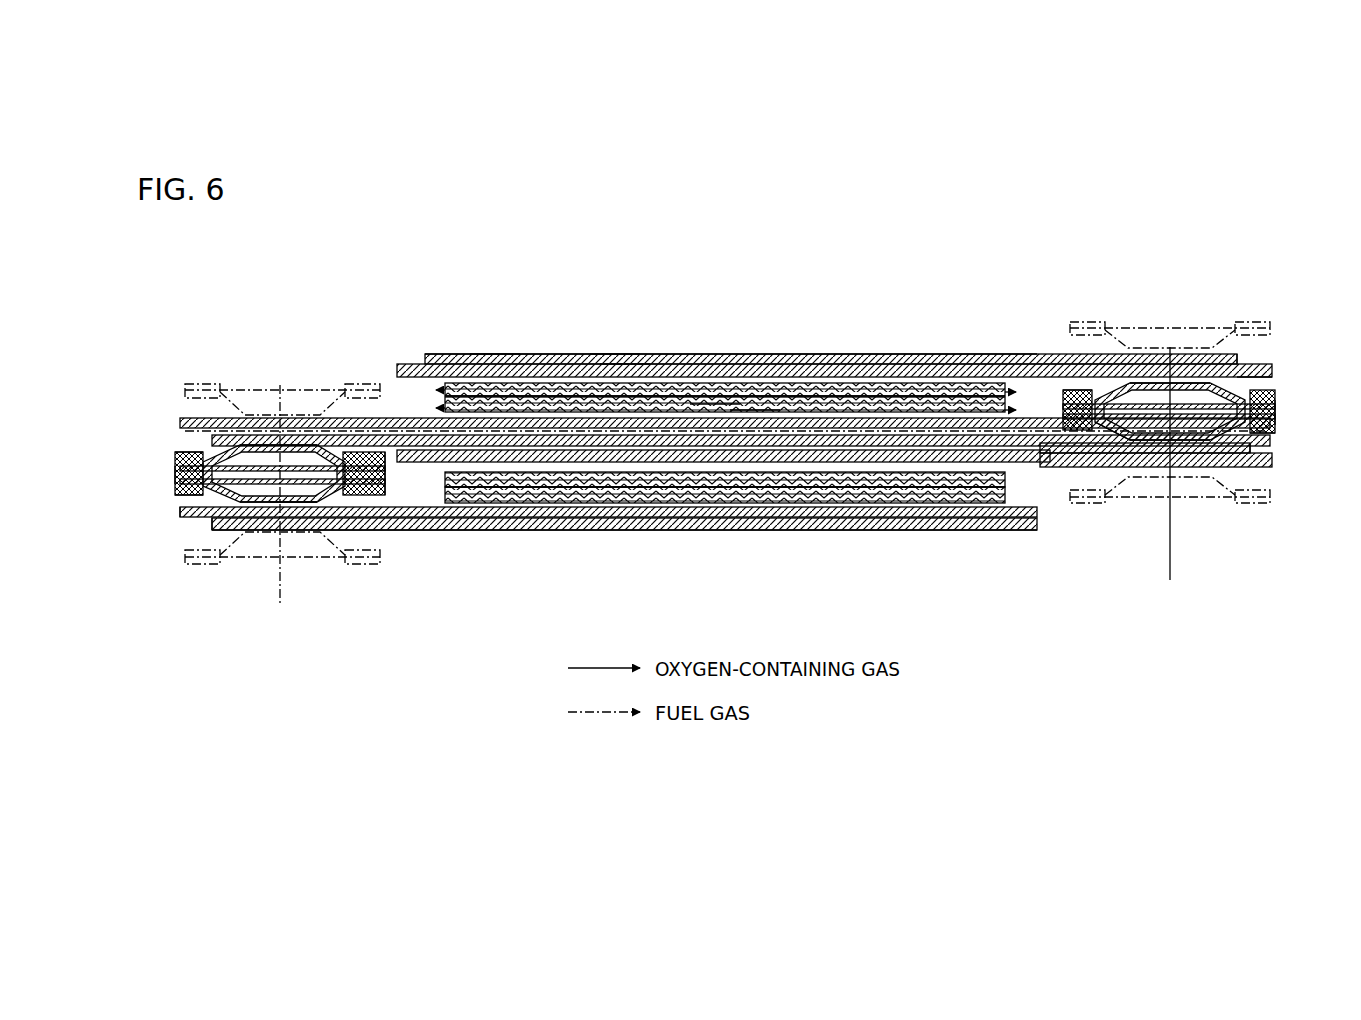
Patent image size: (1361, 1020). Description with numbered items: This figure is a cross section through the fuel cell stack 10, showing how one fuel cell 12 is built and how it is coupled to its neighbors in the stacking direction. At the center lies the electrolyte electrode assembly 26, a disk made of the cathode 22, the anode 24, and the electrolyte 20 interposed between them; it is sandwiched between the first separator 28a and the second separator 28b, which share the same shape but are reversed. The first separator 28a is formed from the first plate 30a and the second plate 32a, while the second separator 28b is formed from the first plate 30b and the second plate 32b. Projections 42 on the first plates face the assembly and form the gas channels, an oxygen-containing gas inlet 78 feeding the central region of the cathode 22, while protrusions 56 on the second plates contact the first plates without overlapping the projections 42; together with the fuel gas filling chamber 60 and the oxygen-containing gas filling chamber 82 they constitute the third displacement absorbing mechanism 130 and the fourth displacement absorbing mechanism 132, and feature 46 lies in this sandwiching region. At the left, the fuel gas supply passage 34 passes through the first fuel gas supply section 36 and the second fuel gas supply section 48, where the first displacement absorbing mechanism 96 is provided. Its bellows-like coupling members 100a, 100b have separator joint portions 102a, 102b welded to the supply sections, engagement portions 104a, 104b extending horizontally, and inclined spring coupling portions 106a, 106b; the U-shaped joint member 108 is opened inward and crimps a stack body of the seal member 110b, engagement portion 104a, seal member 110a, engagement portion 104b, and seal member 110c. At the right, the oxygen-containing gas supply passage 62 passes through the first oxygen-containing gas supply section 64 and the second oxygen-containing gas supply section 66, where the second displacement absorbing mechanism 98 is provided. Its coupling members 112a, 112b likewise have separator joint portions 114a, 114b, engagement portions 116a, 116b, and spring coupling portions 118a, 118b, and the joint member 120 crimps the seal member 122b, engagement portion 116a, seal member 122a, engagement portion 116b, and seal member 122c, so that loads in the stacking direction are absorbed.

The fuel cell stack 10 is at (301, 252).
The fuel cell 12 is at (247, 303).
The electrolyte 20 is at (875, 408).
The cathode 22 is at (838, 395).
The anode 24 is at (908, 418).
The electrolyte electrode assembly 26 is at (932, 307).
The first separator 28a is at (410, 319).
The second separator 28b is at (1070, 258).
The first plate 30a is at (392, 417).
The first plate 30b is at (985, 354).
The second plate 32a is at (427, 432).
The second plate 32b is at (1063, 355).
The fuel gas supply passage 34 is at (300, 531).
The first fuel gas supply section 36 is at (235, 530).
The projections 42 is at (455, 354).
The oxygen-containing gas flow field 46 is at (750, 410).
The second fuel gas supply section 48 is at (183, 522).
The protrusions 56 is at (688, 395).
The fuel gas filling chamber 60 is at (820, 490).
The oxygen-containing gas supply passage 62 is at (1157, 447).
The first oxygen-containing gas supply section 64 is at (1218, 358).
The second oxygen-containing gas supply section 66 is at (1215, 466).
The oxygen-containing gas inlet 78 is at (716, 402).
The oxygen-containing gas filling chamber 82 is at (612, 366).
The first displacement absorbing mechanism 96 is at (186, 352).
The second displacement absorbing mechanism 98 is at (1262, 298).
The coupling member 100a is at (340, 493).
The coupling member 100b is at (250, 432).
The separator joint portion 102a is at (250, 505).
The separator joint portion 102b is at (245, 445).
The engagement portion 104a is at (318, 487).
The engagement portion 104b is at (385, 485).
The coupling portion 106a is at (300, 502).
The coupling portion 106b is at (283, 445).
The joint member 108 is at (178, 460).
The seal member 110a is at (186, 474).
The seal member 110b is at (186, 491).
The seal member 110c is at (180, 452).
The coupling member 112a is at (1232, 434).
The coupling member 112b is at (1238, 366).
The separator joint portion 114a is at (1200, 444).
The separator joint portion 114b is at (1202, 380).
The engagement portion 116a is at (1080, 433).
The engagement portion 116b is at (1063, 398).
The coupling portion 118a is at (1112, 433).
The coupling portion 118b is at (1137, 398).
The joint member 120 is at (1278, 392).
The seal member 122a is at (1277, 413).
The seal member 122b is at (1270, 433).
The seal member 122c is at (1272, 371).
The third displacement absorbing mechanism 130 is at (488, 354).
The fourth displacement absorbing mechanism 132 is at (604, 352).